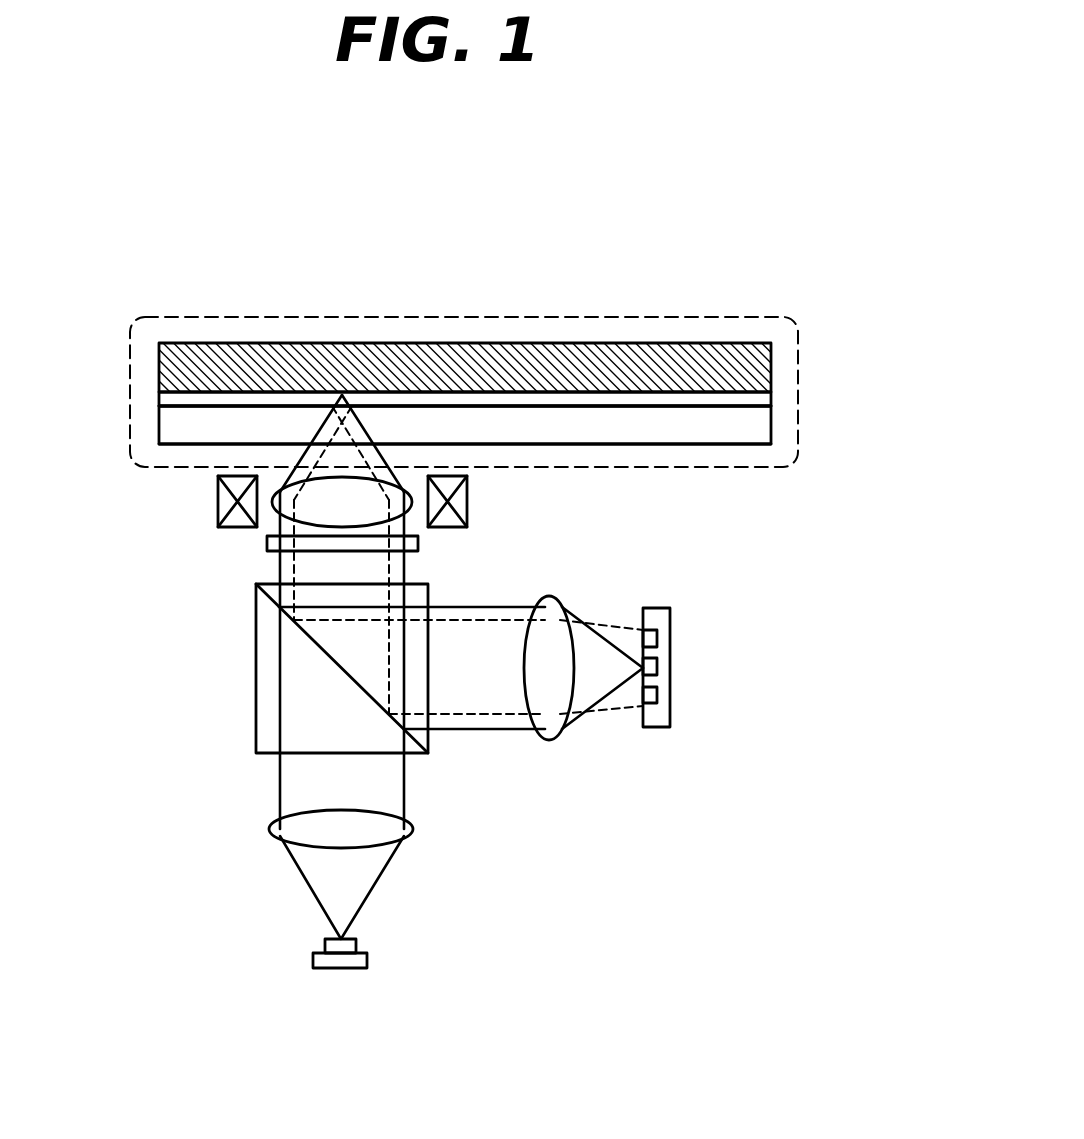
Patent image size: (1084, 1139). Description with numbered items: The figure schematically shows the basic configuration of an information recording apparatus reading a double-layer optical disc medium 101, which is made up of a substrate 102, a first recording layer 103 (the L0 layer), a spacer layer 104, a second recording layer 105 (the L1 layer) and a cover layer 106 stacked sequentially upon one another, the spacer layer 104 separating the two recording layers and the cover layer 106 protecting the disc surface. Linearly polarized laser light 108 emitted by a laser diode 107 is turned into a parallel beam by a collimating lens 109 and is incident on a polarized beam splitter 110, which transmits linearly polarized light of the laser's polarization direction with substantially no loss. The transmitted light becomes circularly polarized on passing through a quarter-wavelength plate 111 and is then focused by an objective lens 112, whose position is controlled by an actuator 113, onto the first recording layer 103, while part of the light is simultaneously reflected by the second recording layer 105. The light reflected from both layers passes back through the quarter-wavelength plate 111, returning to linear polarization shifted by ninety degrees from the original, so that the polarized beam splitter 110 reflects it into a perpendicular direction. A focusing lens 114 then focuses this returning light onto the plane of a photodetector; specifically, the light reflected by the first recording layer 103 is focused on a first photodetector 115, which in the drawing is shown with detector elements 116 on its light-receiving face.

The double-layer optical disc medium 101 is at (232, 317).
The substrate 102 is at (462, 317).
The first recording layer (L0 layer) 103 is at (771, 360).
The spacer layer 104 is at (771, 395).
The second recording layer (L1 layer) 105 is at (720, 406).
The cover layer 106 is at (585, 443).
The laser diode 107 is at (360, 968).
The linearly polarized laser light 108 is at (350, 877).
The collimating lens 109 is at (413, 833).
The polarized beam splitter 110 is at (268, 738).
The quarter-wavelength plate 111 is at (270, 545).
The objective lens 112 is at (413, 498).
The actuator 113 is at (217, 503).
The focusing lens 114 is at (555, 737).
The first photodetector 115 is at (655, 668).
The detector elements 116 is at (653, 633).